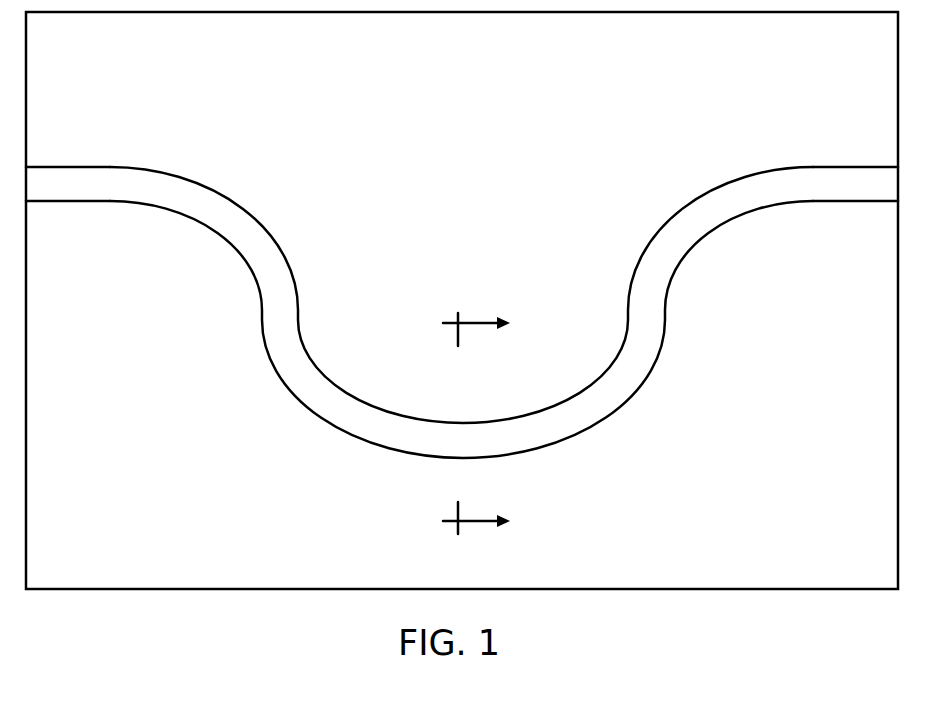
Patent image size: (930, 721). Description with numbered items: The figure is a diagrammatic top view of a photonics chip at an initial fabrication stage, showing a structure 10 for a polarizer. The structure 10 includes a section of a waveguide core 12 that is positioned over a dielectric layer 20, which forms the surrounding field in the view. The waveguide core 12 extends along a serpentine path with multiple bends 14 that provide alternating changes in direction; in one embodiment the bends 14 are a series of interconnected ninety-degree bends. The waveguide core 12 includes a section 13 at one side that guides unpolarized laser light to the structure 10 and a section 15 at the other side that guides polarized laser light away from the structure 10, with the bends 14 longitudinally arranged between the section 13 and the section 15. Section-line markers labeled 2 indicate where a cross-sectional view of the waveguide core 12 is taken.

The structure 10 is at (157, 91).
The waveguide core 12 is at (678, 218).
The section 13 is at (62, 176).
The bends 14 is at (242, 240).
The section 15 is at (858, 180).
The dielectric layer 20 is at (127, 465).
The section line for FIG. 2 is at (489, 425).